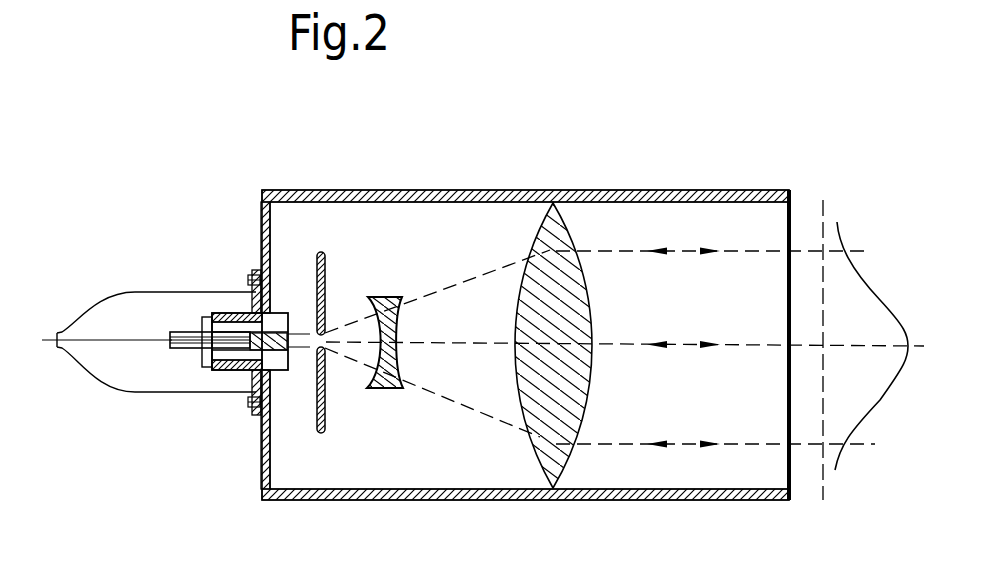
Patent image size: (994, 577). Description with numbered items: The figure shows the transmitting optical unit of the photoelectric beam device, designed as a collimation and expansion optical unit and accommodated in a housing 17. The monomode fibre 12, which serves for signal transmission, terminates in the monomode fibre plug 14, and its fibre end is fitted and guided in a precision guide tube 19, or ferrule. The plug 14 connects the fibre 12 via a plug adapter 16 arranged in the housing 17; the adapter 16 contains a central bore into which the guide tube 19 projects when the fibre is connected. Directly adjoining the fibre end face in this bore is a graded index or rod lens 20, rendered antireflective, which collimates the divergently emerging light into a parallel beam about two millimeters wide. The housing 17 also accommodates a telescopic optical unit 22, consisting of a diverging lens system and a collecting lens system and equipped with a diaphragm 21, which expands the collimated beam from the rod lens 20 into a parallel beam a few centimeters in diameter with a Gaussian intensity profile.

The monomode fibre 12 is at (132, 338).
The monomode fibre plug 14 is at (163, 377).
The plug adapter 16 is at (235, 357).
The housing 17 is at (717, 501).
The precision guide tube 19 is at (222, 337).
The graded index lens 20 is at (295, 376).
The diaphragm 21 is at (327, 263).
The telescopic optical unit 22 is at (552, 503).